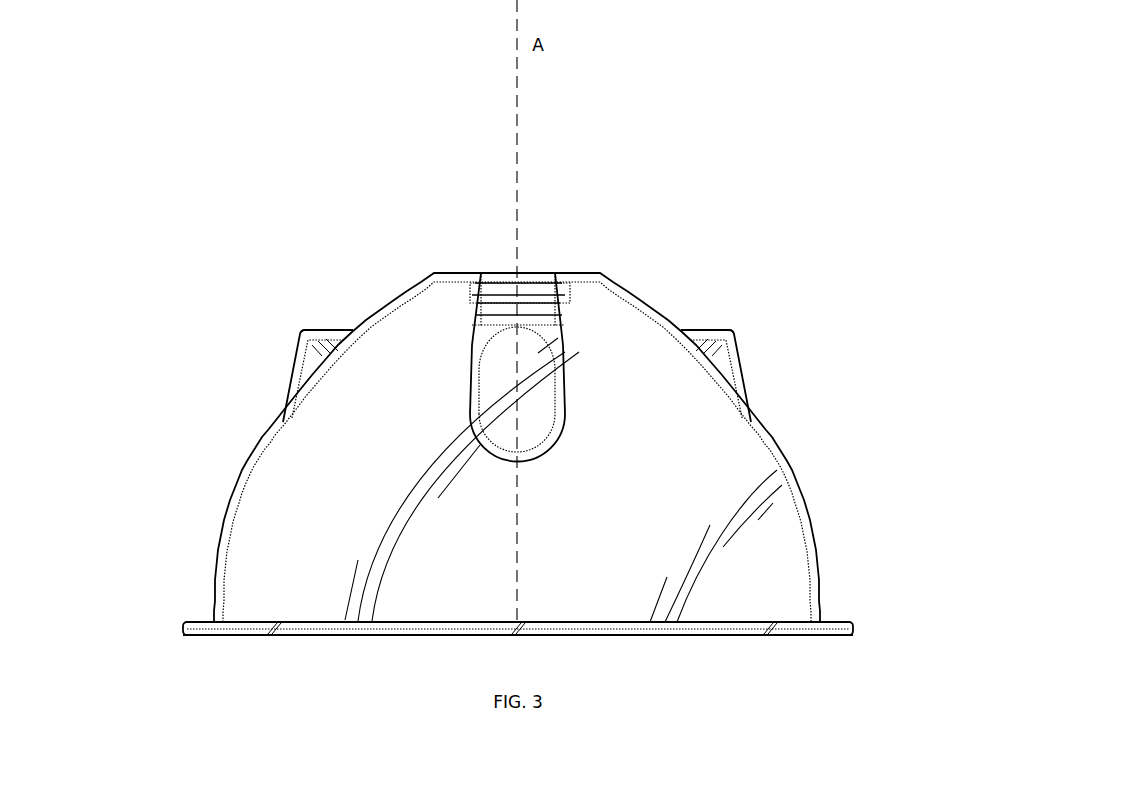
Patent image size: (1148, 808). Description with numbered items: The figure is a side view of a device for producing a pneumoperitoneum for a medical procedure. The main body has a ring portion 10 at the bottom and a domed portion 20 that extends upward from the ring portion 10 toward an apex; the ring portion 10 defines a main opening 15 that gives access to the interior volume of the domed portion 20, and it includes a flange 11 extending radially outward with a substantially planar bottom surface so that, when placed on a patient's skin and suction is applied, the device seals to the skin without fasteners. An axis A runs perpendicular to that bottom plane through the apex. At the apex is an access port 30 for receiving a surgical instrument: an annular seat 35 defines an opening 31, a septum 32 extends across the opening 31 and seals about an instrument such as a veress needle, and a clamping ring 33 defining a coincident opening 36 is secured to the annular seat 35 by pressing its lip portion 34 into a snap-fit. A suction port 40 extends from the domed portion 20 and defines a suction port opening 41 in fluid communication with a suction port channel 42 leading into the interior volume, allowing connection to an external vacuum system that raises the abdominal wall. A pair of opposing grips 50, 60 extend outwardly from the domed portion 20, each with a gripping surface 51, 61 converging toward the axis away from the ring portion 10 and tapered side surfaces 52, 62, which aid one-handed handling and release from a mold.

The ring portion 10 is at (182, 643).
The flange 11 is at (198, 625).
The main opening 15 is at (653, 648).
The domed portion 20 is at (653, 433).
The access port 30 is at (493, 243).
The opening 31 is at (512, 290).
The septum 32 is at (546, 290).
The clamping ring 33 is at (492, 270).
The lip portion 34 is at (481, 271).
The annular seat 35 is at (566, 272).
The opening 36 is at (525, 272).
The suction port 40 is at (472, 343).
The suction port opening 41 is at (543, 268).
The suction port channel 42 is at (529, 313).
The grip 50 is at (742, 312).
The gripping surface 51 is at (742, 343).
The side surface 52 is at (710, 352).
The grip 60 is at (299, 316).
The gripping surface 61 is at (293, 342).
The side surface 62 is at (330, 347).